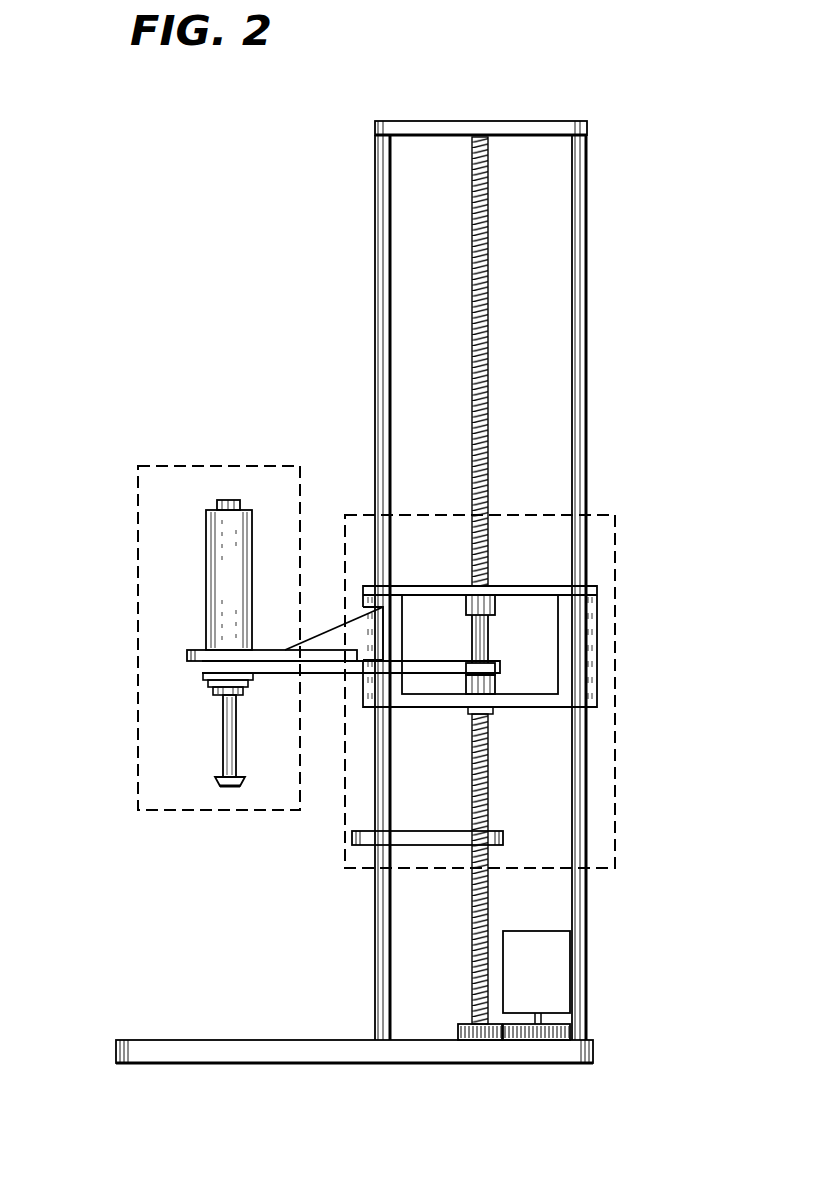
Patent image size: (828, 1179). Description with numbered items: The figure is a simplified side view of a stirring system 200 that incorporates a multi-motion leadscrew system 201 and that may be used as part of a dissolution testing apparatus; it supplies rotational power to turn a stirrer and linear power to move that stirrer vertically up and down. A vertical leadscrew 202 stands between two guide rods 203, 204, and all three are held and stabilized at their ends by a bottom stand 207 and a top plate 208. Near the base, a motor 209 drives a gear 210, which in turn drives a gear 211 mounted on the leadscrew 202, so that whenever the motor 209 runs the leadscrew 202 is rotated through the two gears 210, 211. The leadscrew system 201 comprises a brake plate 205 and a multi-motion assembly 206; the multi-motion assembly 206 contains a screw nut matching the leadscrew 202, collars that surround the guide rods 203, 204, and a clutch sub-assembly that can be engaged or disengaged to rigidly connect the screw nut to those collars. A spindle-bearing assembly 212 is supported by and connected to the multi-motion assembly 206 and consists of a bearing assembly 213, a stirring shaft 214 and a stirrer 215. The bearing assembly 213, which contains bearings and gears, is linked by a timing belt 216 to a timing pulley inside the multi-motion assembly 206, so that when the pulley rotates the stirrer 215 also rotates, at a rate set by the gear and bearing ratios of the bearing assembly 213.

The stirring system 200 is at (222, 104).
The multi-motion leadscrew system 201 is at (615, 541).
The leadscrew 202 is at (472, 336).
The guide rod 203 is at (375, 257).
The guide rod 204 is at (587, 262).
The brake plate 205 is at (432, 831).
The multi-motion assembly 206 is at (530, 587).
The bottom stand 207 is at (208, 1063).
The top plate 208 is at (523, 121).
The motor 209 is at (533, 931).
The gear 210 is at (540, 1040).
The gear 211 is at (480, 1040).
The spindle-bearing assembly 212 is at (138, 606).
The bearing assembly 213 is at (206, 558).
The stirring shaft 214 is at (223, 740).
The stirrer 215 is at (218, 783).
The timing belt 216 is at (275, 675).